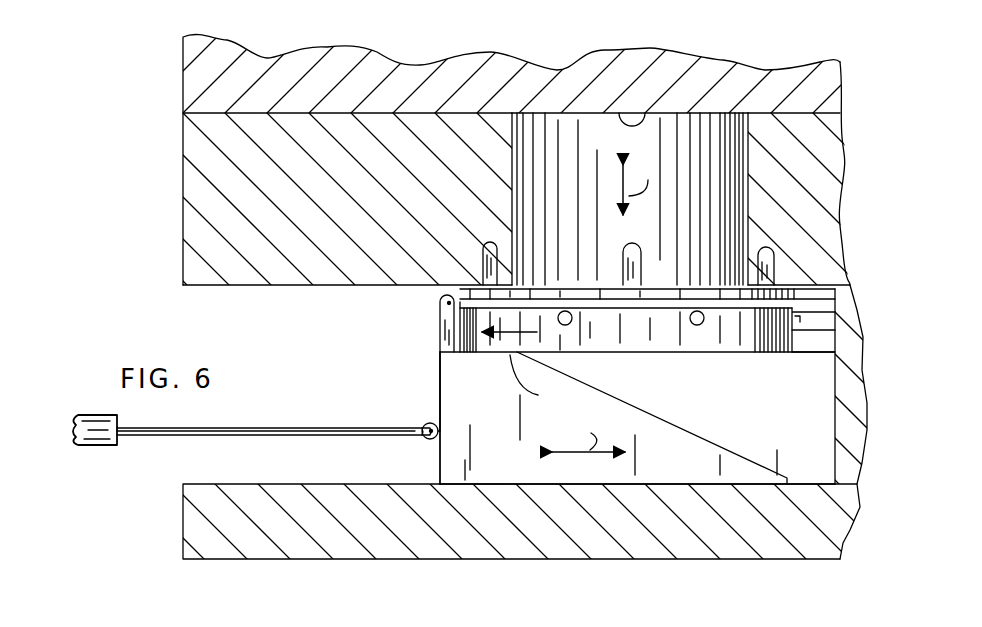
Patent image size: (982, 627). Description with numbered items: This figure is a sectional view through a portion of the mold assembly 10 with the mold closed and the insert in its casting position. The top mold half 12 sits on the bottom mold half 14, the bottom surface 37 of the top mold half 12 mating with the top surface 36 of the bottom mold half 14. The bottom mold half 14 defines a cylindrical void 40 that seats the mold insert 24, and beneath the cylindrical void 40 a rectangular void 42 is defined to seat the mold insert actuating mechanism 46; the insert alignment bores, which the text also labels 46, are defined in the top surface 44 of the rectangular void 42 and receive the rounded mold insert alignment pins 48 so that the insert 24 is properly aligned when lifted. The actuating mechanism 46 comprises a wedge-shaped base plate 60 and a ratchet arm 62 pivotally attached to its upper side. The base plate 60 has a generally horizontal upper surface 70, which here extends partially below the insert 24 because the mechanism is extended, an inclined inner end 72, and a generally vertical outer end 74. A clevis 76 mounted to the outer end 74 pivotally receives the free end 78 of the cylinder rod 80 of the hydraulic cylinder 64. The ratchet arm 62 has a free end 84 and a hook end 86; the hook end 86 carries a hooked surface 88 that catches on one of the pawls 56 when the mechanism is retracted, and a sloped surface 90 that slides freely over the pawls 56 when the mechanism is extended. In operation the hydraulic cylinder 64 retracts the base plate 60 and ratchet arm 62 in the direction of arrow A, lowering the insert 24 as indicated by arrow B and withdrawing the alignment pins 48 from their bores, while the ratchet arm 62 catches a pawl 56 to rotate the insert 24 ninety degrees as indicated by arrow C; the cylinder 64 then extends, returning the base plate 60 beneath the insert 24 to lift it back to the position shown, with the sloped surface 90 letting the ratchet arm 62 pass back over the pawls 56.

The mold assembly 10 is at (884, 90).
The top mold half 12 is at (181, 92).
The bottom mold half 14 is at (180, 522).
The mold insert 24 is at (543, 112).
The top surface 36 is at (333, 111).
The bottom surface 37 is at (447, 115).
The cylindrical void 40 is at (747, 160).
The rectangular void 42 is at (803, 405).
The top surface of the rectangular void 44 is at (440, 318).
The mold insert actuating mechanism 46 is at (485, 248).
The mold insert alignment pins 48 is at (497, 255).
The pawls 56 is at (570, 326).
The wedge-shaped base plate 60 is at (503, 485).
The ratchet arm 62 is at (797, 353).
The hydraulic cylinder 64 is at (89, 455).
The upper surface 70 is at (482, 353).
The inclined inner end 72 is at (678, 418).
The outer end 74 is at (439, 383).
The clevis 76 is at (430, 425).
The free end of the cylinder rod 78 is at (418, 440).
The cylinder rod 80 is at (197, 428).
The free end 84 is at (228, 285).
The hook end 86 is at (833, 290).
The hooked surface 88 is at (798, 330).
The sloped surface 90 is at (800, 322).